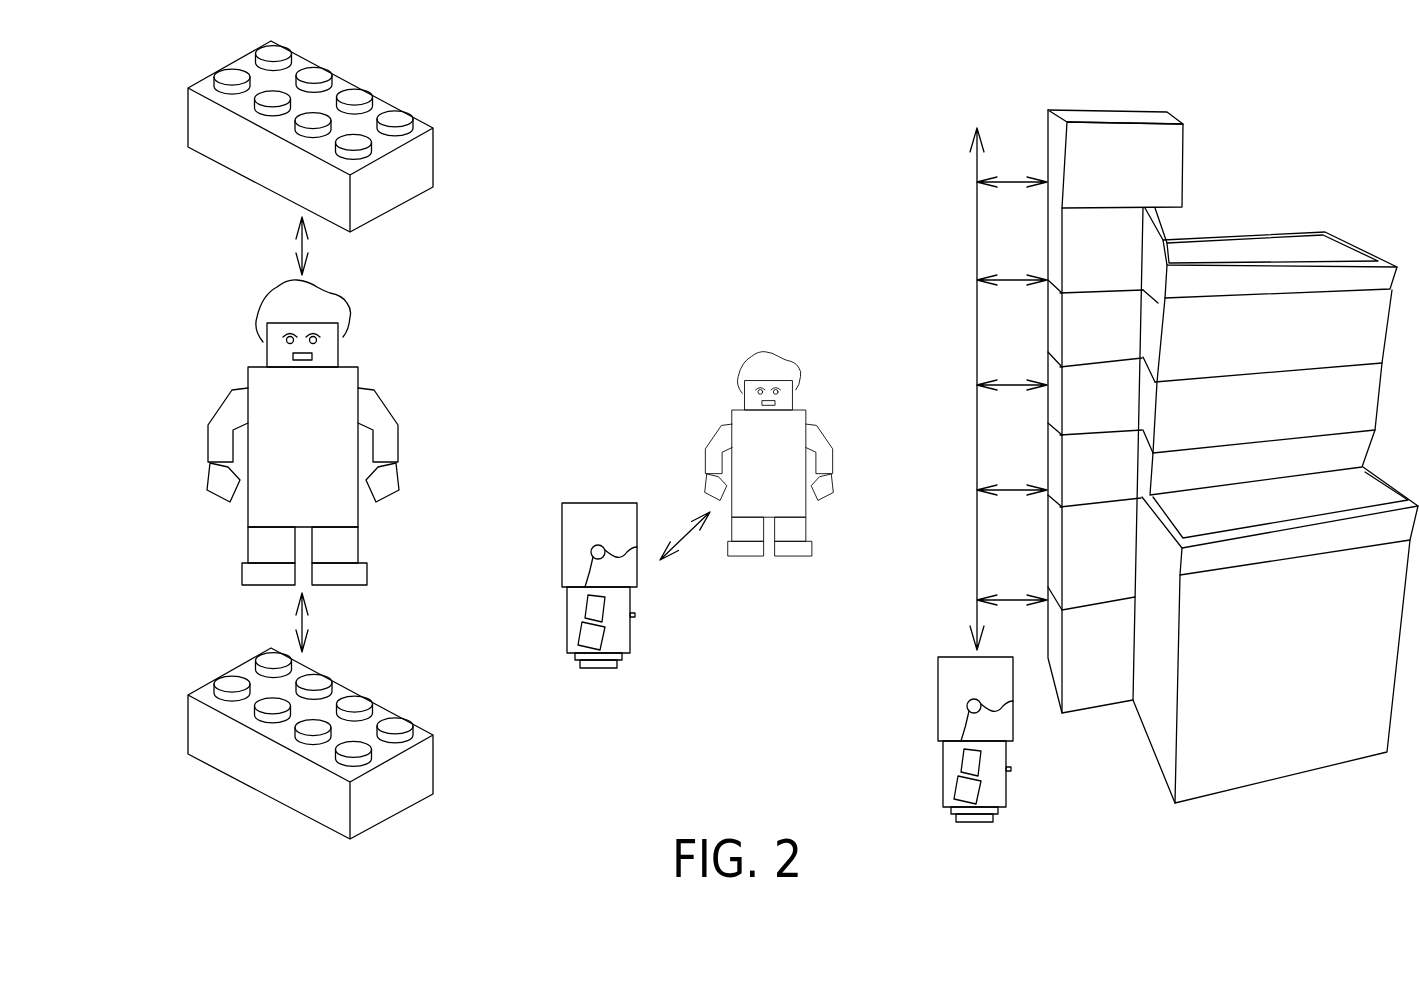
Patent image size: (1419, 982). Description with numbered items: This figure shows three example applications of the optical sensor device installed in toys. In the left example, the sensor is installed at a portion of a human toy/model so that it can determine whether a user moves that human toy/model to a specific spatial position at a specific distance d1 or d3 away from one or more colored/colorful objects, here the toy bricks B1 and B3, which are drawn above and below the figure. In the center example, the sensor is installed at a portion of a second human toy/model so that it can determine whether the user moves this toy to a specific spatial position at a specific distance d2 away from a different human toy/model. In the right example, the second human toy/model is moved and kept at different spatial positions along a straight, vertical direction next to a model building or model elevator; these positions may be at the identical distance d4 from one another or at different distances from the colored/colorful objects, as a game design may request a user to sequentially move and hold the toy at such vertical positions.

The toy brick B1 is at (210, 124).
The toy brick B3 is at (210, 731).
The specific distance d1 is at (286, 246).
The specific distance d2 is at (685, 545).
The specific distance d3 is at (286, 622).
The identical distance d4 is at (1008, 389).